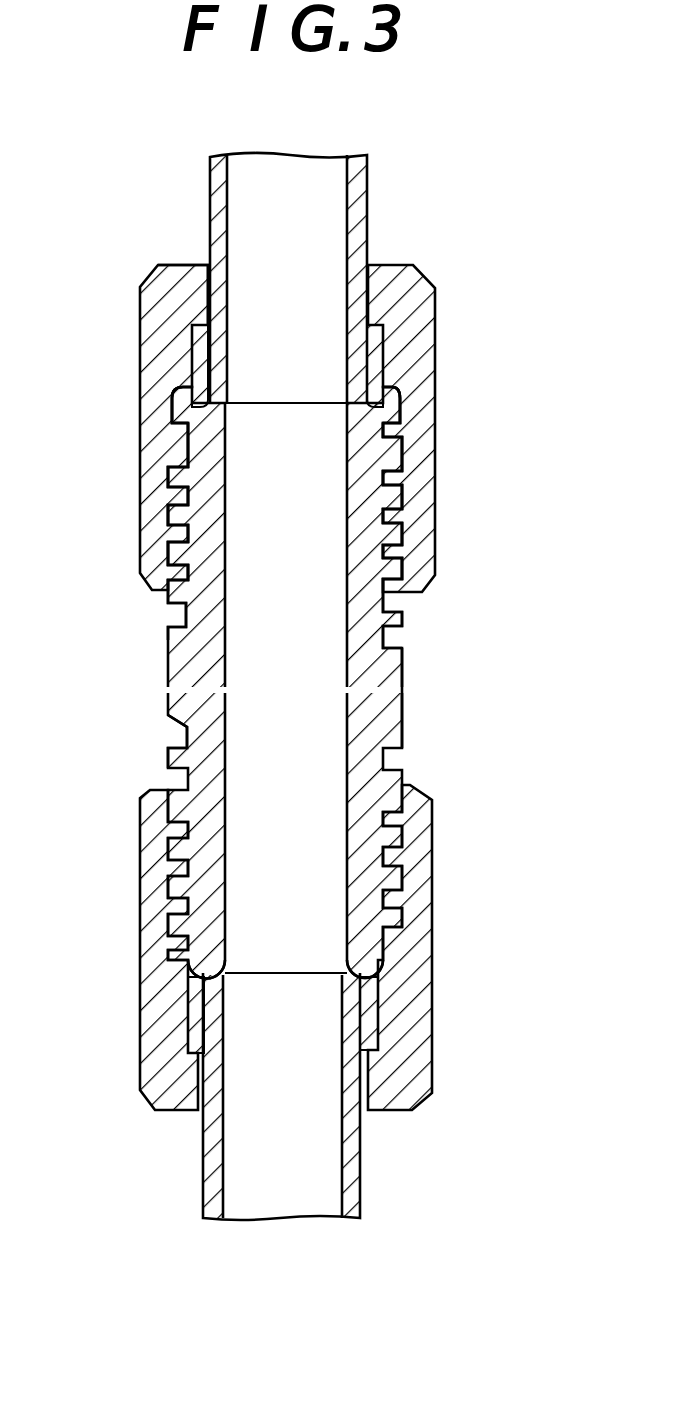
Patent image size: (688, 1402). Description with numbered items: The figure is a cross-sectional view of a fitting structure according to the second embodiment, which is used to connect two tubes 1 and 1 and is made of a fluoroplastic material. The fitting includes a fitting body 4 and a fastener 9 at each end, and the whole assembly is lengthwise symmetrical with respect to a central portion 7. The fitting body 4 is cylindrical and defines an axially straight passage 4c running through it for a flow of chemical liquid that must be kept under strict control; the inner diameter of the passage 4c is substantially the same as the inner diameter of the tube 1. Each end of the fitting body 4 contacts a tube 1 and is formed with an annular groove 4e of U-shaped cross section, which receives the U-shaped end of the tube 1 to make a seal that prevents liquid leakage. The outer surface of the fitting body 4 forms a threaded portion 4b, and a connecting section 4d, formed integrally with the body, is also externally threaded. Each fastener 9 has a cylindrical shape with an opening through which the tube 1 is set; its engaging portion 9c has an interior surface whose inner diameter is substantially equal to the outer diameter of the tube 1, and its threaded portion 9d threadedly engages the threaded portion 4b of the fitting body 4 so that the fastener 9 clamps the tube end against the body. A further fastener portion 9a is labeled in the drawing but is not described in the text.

The tube 1 is at (367, 190).
The fitting body 4 is at (430, 744).
The threaded portion 4b is at (401, 618).
The passage 4c is at (288, 890).
The connecting section 4d is at (168, 758).
The annular groove 4e is at (173, 433).
The central portion 7 is at (403, 709).
The fastener 9 is at (450, 377).
The bore of nut 9a is at (207, 264).
The engaging portion 9c is at (377, 320).
The threaded portion 9d is at (170, 400).